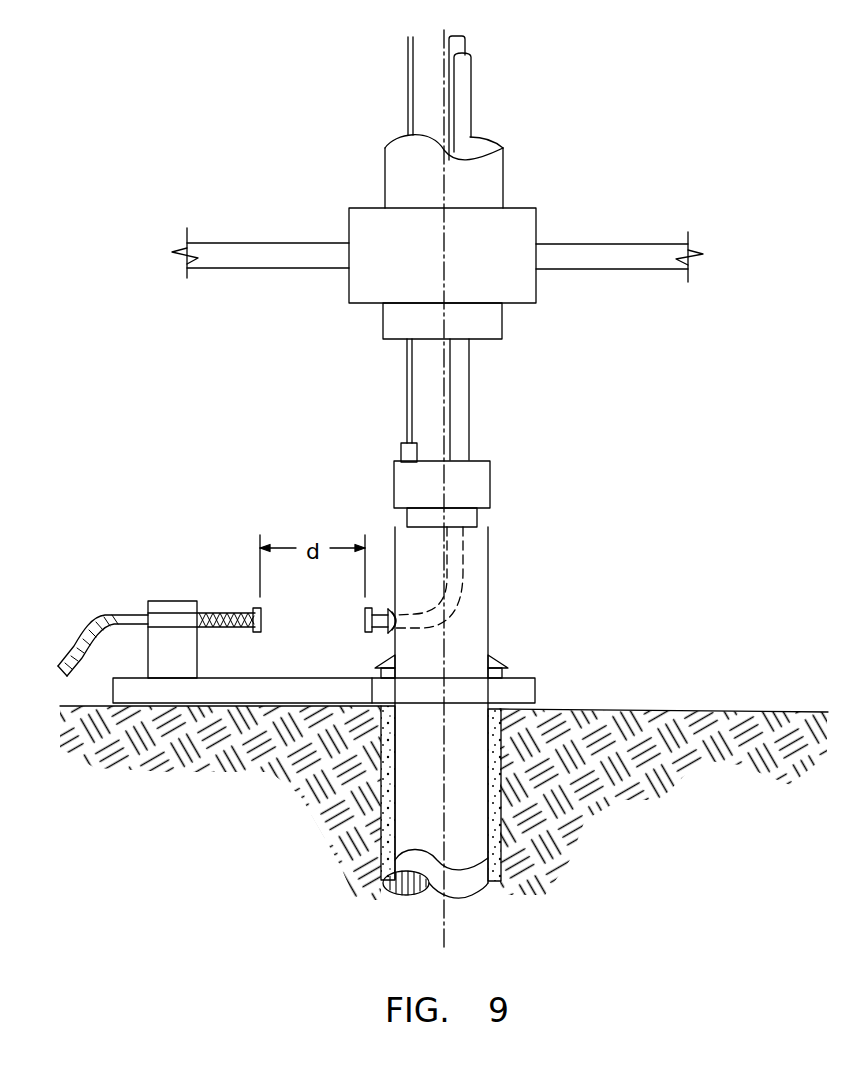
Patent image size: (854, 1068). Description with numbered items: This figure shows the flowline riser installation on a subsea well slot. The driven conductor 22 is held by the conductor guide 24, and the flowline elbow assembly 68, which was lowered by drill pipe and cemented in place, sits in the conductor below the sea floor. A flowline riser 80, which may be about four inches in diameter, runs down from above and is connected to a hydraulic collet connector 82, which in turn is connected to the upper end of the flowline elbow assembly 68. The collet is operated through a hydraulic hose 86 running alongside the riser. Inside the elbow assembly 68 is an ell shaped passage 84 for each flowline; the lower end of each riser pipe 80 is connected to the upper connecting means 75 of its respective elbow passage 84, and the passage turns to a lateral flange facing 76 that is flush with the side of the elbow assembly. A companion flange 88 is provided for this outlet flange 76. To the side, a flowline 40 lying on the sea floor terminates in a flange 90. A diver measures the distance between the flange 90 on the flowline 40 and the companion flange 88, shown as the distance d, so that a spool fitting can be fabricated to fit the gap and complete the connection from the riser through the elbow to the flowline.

The conductor 22 is at (490, 180).
The conductor guide 24 is at (520, 222).
The flowline 40 is at (113, 617).
The flowline elbow assembly 68 is at (480, 600).
The upper connecting means 75 is at (460, 530).
The lateral flange facing 76 is at (393, 636).
The flowline riser 80 is at (465, 80).
The hydraulic collet connector 82 is at (481, 480).
The ell shaped passage 84 is at (463, 565).
The hydraulic hose 86 is at (407, 383).
The companion flange 88 is at (366, 614).
The flange 90 is at (254, 612).